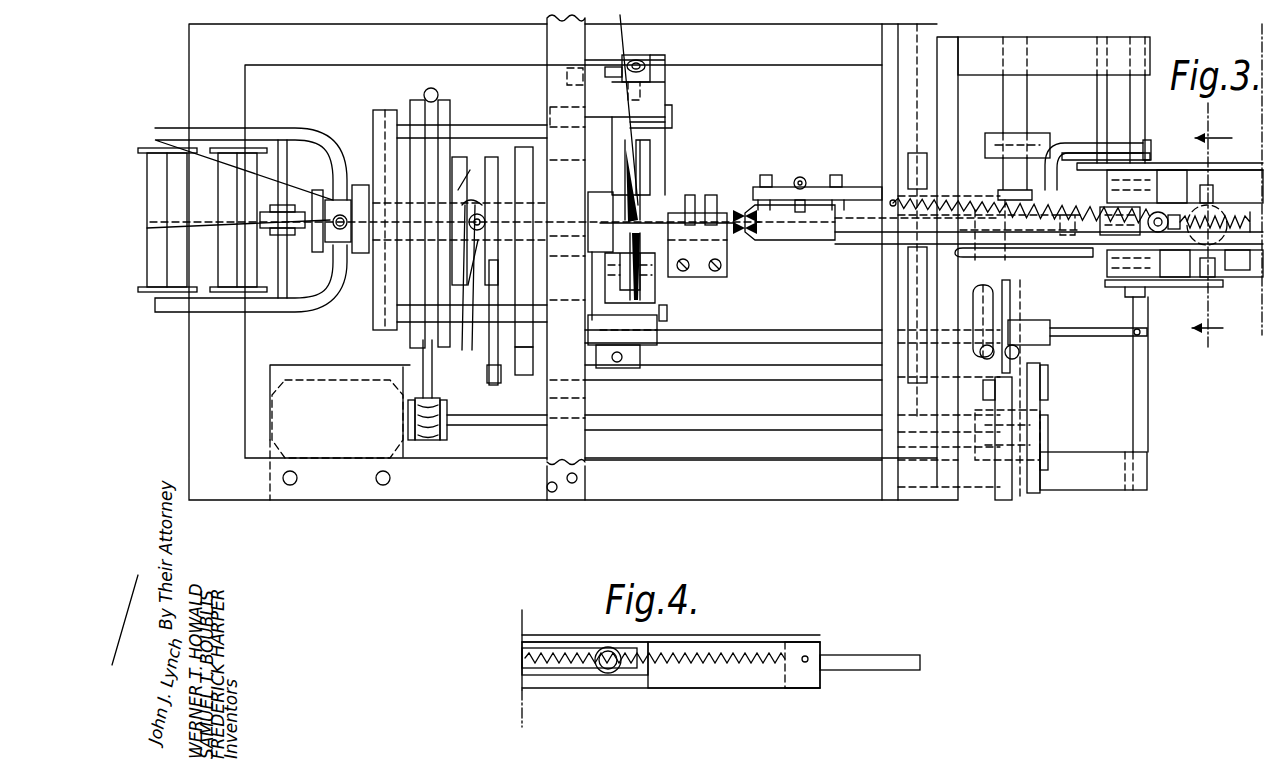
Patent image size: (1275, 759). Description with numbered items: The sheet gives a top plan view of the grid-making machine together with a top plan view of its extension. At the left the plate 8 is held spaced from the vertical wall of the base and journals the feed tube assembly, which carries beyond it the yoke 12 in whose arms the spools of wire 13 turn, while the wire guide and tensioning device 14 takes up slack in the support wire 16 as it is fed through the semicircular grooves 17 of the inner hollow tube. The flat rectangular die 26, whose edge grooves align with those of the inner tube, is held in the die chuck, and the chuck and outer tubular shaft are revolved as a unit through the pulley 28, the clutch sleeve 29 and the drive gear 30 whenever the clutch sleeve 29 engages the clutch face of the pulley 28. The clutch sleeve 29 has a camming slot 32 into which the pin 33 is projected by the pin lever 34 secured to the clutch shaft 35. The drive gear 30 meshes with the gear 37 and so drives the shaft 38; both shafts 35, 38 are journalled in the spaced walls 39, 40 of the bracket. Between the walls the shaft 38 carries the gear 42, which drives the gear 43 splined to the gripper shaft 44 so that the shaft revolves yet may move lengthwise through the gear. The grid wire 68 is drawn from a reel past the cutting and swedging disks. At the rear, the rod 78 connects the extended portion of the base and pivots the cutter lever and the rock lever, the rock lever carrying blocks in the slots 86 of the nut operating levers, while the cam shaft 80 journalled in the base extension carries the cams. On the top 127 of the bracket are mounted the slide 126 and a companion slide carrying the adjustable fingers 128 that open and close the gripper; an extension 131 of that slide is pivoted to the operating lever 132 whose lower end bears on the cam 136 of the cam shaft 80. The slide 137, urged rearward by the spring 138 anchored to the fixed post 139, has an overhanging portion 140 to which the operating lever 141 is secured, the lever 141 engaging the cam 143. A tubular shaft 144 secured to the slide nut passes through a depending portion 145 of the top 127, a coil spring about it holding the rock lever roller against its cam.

In FIG. 3, the plate 8 is at (1219, 226).
In FIG. 3, the spool carrying frame or yoke 12 is at (303, 134).
In FIG. 3, the spools of wire 13 is at (157, 150).
In FIG. 3, the wire guide and tensioning device 14 is at (290, 212).
In FIG. 3, the support wire 16 is at (653, 220).
In FIG. 3, the grooves 17 is at (1032, 460).
In FIG. 3, the die 26 is at (657, 206).
In FIG. 3, the pulley 28 is at (442, 104).
In FIG. 3, the clutch sleeve 29 is at (472, 175).
In FIG. 3, the drive gear 30 is at (520, 146).
In FIG. 3, the camming slot 32 is at (470, 245).
In FIG. 3, the pin 33 is at (482, 213).
In FIG. 3, the pin lever 34 is at (496, 355).
In FIG. 3, the clutch shaft 35 is at (712, 375).
In FIG. 3, the gear 37 is at (521, 376).
In FIG. 3, the shaft 38 is at (736, 342).
In FIG. 3, the wall 39 is at (880, 398).
In FIG. 3, the wall 40 is at (942, 440).
In FIG. 3, the gear 42 is at (906, 312).
In FIG. 3, the gear 43 is at (906, 265).
In FIG. 3, the gripper shaft 44 is at (856, 205).
In FIG. 3, the grid wire 68 is at (618, 45).
In FIG. 3, the rod 78 is at (1148, 399).
In FIG. 3, the cam shaft 80 is at (1017, 500).
In FIG. 3, the slots 86 is at (1020, 37).
In FIG. 4, the slide 126 is at (640, 676).
In FIG. 4, the top 127 is at (745, 642).
In FIG. 3, the adjustable fingers 128 is at (775, 182).
In FIG. 3, the extension 131 is at (1068, 142).
In FIG. 3, the operating lever 132 is at (1080, 153).
In FIG. 3, the cam 136 is at (992, 134).
In FIG. 3, the slide 137 is at (1115, 236).
In FIG. 4, the spring 138 is at (705, 660).
In FIG. 4, the fixed post 139 is at (806, 656).
In FIG. 3, the overhanging portion 140 is at (1160, 177).
In FIG. 3, the operating lever 141 is at (1110, 163).
In FIG. 3, the cam 143 is at (988, 178).
In FIG. 4, the tubular shaft 144 is at (885, 657).
In FIG. 4, the depending portion 145 is at (795, 688).